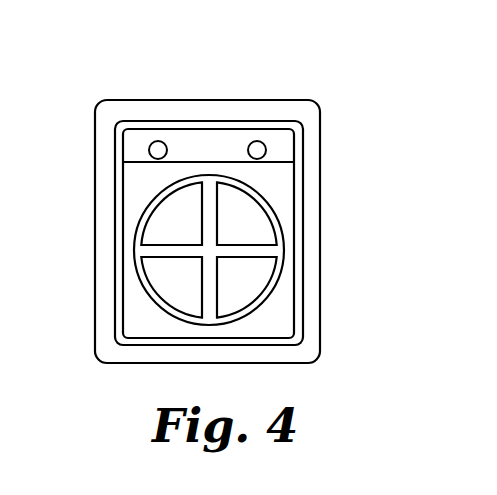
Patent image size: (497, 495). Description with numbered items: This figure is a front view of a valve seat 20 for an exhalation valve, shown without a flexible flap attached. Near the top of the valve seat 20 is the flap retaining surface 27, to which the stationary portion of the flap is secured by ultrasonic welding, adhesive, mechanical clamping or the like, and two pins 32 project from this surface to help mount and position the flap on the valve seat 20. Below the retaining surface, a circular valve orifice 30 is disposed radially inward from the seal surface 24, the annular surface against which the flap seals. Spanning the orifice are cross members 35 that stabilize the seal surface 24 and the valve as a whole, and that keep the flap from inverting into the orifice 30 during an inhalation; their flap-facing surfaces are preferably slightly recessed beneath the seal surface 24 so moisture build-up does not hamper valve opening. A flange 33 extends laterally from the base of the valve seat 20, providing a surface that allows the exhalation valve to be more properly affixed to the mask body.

The valve seat 20 is at (342, 106).
The seal surface 24 is at (157, 303).
The flap retaining surface 27 is at (212, 147).
The valve orifice 30 is at (255, 208).
The pins 32 is at (158, 141).
The flange 33 is at (313, 158).
The cross members 35 is at (217, 308).